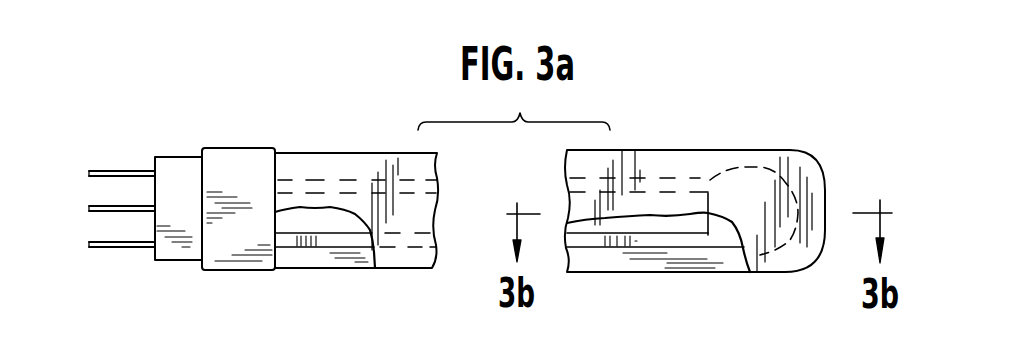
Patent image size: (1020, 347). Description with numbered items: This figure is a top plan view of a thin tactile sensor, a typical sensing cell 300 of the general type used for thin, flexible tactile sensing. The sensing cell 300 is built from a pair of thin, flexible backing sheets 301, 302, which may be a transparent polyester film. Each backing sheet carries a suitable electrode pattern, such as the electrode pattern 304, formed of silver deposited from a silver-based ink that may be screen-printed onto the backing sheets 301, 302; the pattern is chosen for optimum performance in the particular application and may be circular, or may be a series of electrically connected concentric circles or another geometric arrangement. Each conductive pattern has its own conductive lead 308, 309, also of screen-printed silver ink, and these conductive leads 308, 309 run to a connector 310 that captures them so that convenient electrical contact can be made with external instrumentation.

The sensing cell 300 is at (655, 137).
The backing sheet 301 is at (797, 163).
The backing sheet 302 is at (623, 263).
The electrode pattern 304 is at (727, 232).
The conductive lead 308 is at (355, 178).
The conductive lead 309 is at (566, 240).
The connector 310 is at (180, 157).